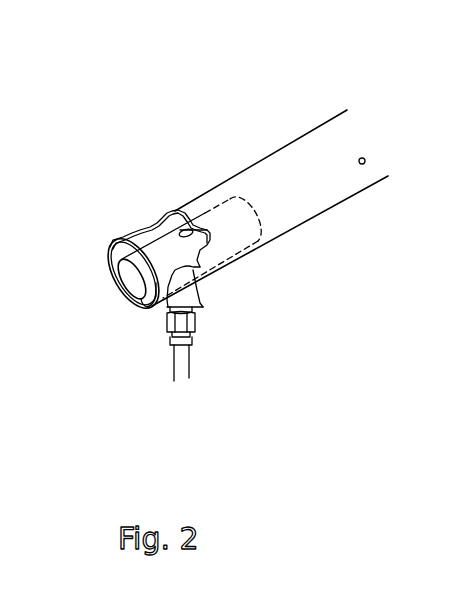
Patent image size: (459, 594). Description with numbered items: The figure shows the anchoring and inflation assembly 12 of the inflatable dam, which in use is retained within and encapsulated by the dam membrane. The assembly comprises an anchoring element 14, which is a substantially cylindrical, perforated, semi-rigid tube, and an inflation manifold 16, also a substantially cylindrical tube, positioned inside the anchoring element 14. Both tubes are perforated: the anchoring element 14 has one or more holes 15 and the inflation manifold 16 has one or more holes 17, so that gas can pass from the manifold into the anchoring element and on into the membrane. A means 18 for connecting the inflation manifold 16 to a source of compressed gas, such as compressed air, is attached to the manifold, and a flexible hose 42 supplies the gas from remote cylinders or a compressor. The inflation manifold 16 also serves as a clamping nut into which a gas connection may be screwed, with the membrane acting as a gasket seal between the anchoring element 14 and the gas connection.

The anchoring and inflation assembly 12 is at (200, 101).
The anchoring element 14 is at (245, 172).
The hole 15 is at (362, 164).
The inflation manifold 16 is at (134, 260).
The hole 17 is at (190, 236).
The means for connecting the inflation manifold to a source of compressed gas 18 is at (198, 300).
The flexible hose 42 is at (188, 376).